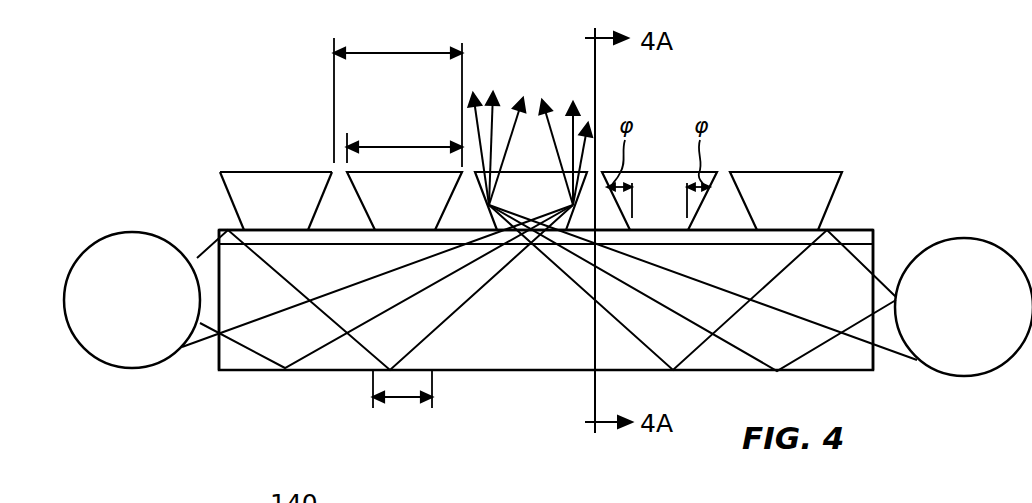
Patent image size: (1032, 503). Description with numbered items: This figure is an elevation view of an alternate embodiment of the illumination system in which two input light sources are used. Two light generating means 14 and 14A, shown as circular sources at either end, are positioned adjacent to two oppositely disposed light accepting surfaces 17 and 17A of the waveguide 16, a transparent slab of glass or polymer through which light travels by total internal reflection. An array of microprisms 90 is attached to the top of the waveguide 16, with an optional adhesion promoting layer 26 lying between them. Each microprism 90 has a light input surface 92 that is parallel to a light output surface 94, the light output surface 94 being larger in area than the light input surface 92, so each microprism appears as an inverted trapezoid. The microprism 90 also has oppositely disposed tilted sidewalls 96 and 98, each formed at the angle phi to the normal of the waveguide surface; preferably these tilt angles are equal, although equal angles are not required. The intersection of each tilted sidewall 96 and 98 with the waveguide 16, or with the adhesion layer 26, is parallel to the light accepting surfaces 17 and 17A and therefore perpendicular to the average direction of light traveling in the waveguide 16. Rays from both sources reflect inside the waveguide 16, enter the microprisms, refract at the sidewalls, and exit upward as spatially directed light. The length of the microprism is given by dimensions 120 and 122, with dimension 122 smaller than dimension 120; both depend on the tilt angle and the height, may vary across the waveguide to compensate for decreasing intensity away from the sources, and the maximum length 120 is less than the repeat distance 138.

The light generating means 14 is at (128, 230).
The light generating means 14A is at (967, 238).
The waveguide 16 is at (737, 372).
The light accepting surface 17 is at (215, 358).
The light accepting surface 17A is at (873, 362).
The adhesion promoting layer 26 is at (863, 231).
The microprism 90 is at (840, 173).
The light input surface 92 is at (257, 230).
The light output surface 94 is at (310, 172).
The tilted sidewall 96 is at (220, 183).
The tilted sidewall 98 is at (317, 197).
The length dimension 120 is at (407, 146).
The length dimension 122 is at (398, 398).
The repeat distance 138 is at (410, 53).